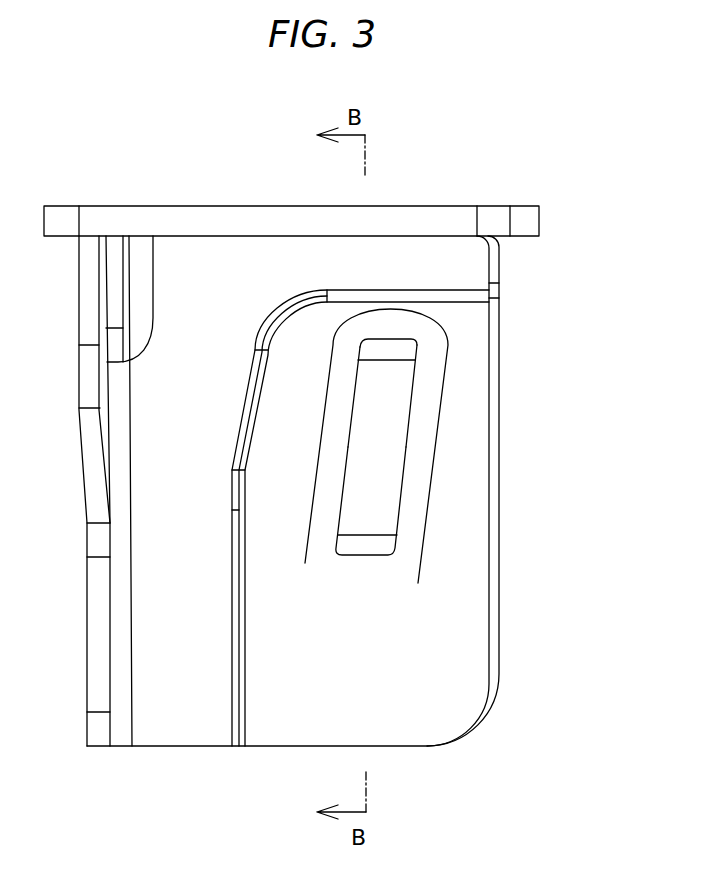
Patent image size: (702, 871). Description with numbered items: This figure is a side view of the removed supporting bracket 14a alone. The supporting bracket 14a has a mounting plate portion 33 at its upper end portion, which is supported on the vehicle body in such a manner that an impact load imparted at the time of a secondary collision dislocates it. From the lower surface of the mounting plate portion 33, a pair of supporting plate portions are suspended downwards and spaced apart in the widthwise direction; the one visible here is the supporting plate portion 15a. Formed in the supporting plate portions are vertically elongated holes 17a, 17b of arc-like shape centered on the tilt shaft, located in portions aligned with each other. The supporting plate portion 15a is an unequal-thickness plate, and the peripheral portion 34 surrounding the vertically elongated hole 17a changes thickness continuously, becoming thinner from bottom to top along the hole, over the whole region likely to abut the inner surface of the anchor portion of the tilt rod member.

The supporting bracket 14a is at (209, 218).
The mounting plate portion 33 is at (410, 218).
The peripheral portion 34 is at (423, 485).
The vertically elongated hole 17a is at (410, 388).
The vertically elongated hole 17b is at (367, 532).
The supporting plate portion 15a is at (458, 629).